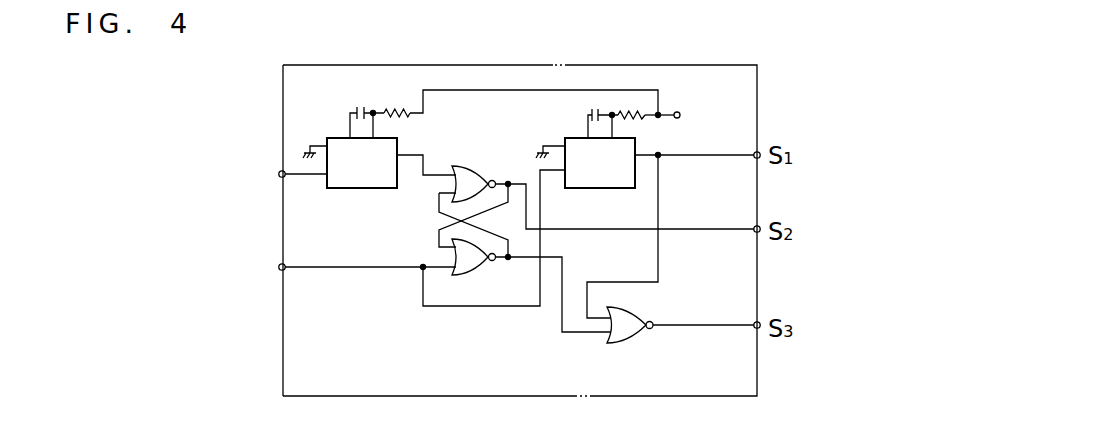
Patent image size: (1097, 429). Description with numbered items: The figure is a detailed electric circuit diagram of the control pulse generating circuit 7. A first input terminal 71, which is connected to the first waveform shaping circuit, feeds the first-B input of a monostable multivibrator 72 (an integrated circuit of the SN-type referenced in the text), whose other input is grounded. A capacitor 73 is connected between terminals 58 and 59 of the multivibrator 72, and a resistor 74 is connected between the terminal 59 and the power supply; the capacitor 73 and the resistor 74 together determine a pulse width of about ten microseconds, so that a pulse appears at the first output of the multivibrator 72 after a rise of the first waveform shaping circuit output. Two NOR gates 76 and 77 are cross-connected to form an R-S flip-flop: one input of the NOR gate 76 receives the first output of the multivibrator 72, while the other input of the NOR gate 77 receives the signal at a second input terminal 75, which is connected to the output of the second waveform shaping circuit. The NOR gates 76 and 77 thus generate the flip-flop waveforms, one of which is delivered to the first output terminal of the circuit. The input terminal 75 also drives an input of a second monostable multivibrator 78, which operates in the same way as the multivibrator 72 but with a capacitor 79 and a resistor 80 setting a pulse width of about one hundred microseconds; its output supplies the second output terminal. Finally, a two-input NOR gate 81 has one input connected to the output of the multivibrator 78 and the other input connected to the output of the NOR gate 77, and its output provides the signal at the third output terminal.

The control pulse generating circuit 7 is at (577, 65).
The terminal of the multivibrator 58 is at (363, 150).
The terminal of the multivibrator 59 is at (407, 138).
The input terminal 71 is at (279, 174).
The monostable multivibrator 72 is at (379, 153).
The capacitor 73 is at (358, 107).
The resistor 74 is at (411, 106).
The input terminal 75 is at (279, 267).
The NOR gate 76 is at (472, 178).
The NOR gate 77 is at (472, 275).
The monostable multivibrator 78 is at (620, 188).
The capacitor 79 is at (596, 109).
The resistor 80 is at (644, 110).
The two-input NOR gate 81 is at (630, 342).